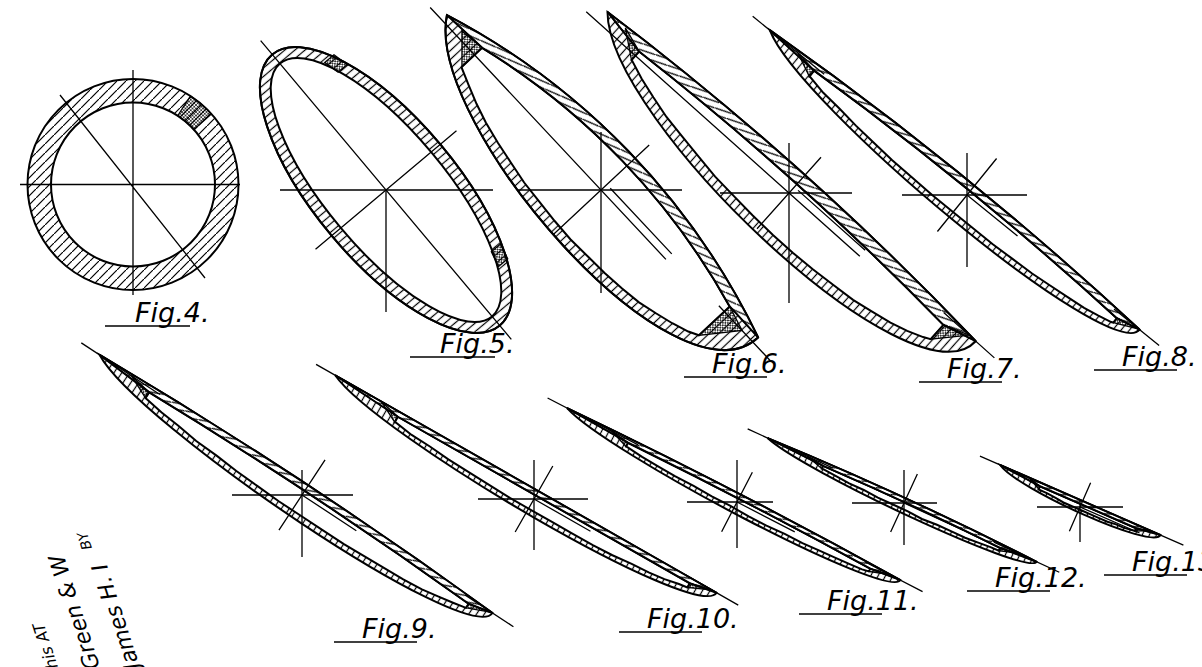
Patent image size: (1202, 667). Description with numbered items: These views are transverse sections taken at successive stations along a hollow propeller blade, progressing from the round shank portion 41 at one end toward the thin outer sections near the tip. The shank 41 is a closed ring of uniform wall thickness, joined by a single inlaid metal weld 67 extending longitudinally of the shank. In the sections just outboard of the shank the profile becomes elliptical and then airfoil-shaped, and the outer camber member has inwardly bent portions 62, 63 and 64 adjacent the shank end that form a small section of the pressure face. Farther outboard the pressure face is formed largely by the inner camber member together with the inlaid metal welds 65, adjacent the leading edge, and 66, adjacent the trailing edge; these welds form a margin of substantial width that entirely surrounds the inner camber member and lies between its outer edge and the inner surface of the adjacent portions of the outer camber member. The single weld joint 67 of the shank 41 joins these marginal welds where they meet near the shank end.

In FIG. 4, the shank portion 41 is at (214, 246).
In FIG. 5, the inwardly bent portion 62 is at (302, 50).
In FIG. 5, the inwardly bent portion 63 is at (506, 295).
In FIG. 6, the inwardly bent portion 64 is at (760, 321).
In FIG. 5, the inlaid metal weld 65 is at (505, 256).
In FIG. 6, the inlaid metal weld 65 is at (721, 328).
In FIG. 7, the inlaid metal weld 65 is at (945, 339).
In FIG. 8, the inlaid metal weld 65 is at (1122, 326).
In FIG. 9, the inlaid metal weld 65 is at (475, 611).
In FIG. 10, the inlaid metal weld 65 is at (696, 590).
In FIG. 11, the inlaid metal weld 65 is at (877, 574).
In FIG. 12, the inlaid metal weld 65 is at (1006, 552).
In FIG. 13, the inlaid metal weld 65 is at (1141, 532).
In FIG. 5, the inlaid metal weld 66 is at (340, 60).
In FIG. 6, the inlaid metal weld 66 is at (465, 50).
In FIG. 7, the inlaid metal weld 66 is at (628, 49).
In FIG. 8, the inlaid metal weld 66 is at (805, 68).
In FIG. 9, the inlaid metal weld 66 is at (139, 390).
In FIG. 10, the inlaid metal weld 66 is at (388, 415).
In FIG. 11, the inlaid metal weld 66 is at (620, 441).
In FIG. 12, the inlaid metal weld 66 is at (816, 464).
In FIG. 13, the inlaid metal weld 66 is at (1034, 485).
In FIG. 4, the inlaid metal weld 67 is at (199, 108).